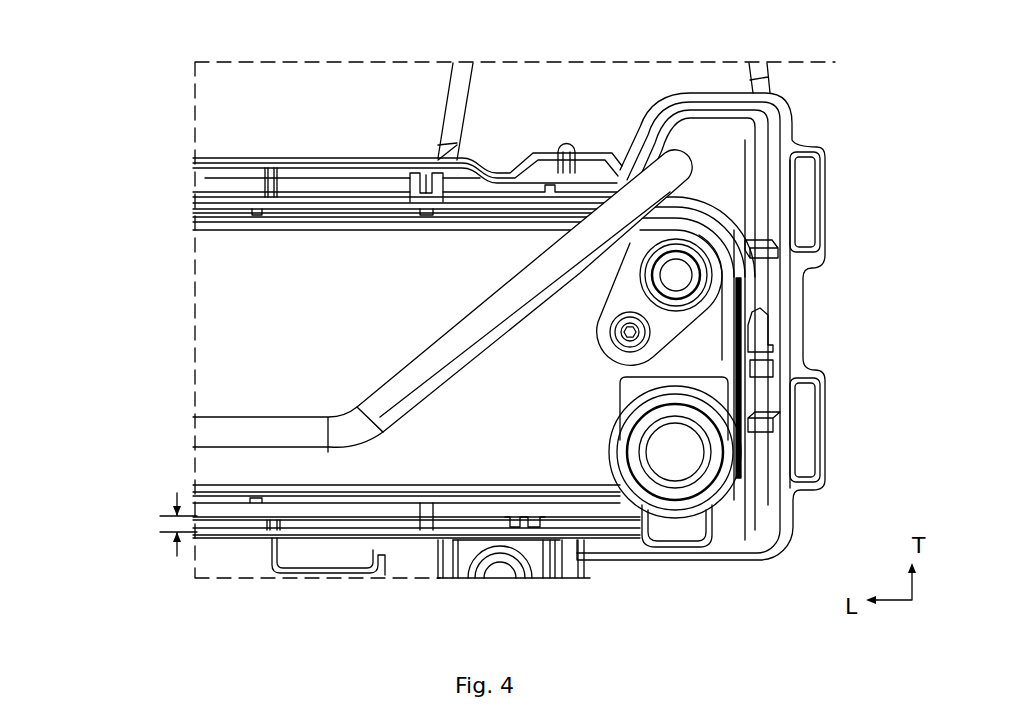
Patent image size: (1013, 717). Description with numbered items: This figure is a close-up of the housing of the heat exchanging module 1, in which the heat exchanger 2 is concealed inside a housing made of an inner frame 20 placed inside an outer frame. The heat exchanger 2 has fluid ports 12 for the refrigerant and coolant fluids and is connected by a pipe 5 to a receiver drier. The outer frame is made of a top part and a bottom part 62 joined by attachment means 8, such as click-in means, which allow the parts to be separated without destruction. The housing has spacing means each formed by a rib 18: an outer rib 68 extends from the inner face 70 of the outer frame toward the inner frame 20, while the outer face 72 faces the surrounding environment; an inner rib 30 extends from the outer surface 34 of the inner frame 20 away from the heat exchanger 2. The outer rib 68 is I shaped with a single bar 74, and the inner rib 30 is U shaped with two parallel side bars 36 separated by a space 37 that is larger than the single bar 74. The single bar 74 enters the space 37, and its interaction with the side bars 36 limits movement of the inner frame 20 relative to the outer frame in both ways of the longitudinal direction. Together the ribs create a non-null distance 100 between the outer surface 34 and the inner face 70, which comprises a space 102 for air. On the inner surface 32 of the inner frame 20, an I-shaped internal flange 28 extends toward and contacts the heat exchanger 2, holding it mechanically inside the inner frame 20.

The heat exchanging module 1 is at (856, 111).
The heat exchanger 2 is at (227, 341).
The pipe 5 is at (643, 180).
The attachment means 8 is at (272, 550).
The fluid port 12 is at (752, 467).
The rib 18 is at (444, 337).
The inner frame 20 is at (680, 450).
The internal flange 28 is at (428, 532).
The inner rib 30 is at (414, 179).
The inner surface 32 is at (243, 209).
The outer surface 34 is at (252, 197).
The side bar 36 is at (776, 350).
The space 37 is at (440, 157).
The bottom part 62 is at (795, 288).
The outer rib 68 is at (427, 189).
The inner face 70 is at (209, 172).
The outer face 72 is at (242, 160).
The single bar 74 is at (775, 365).
The non-null distance 100 is at (176, 514).
The space for air 102 is at (593, 529).